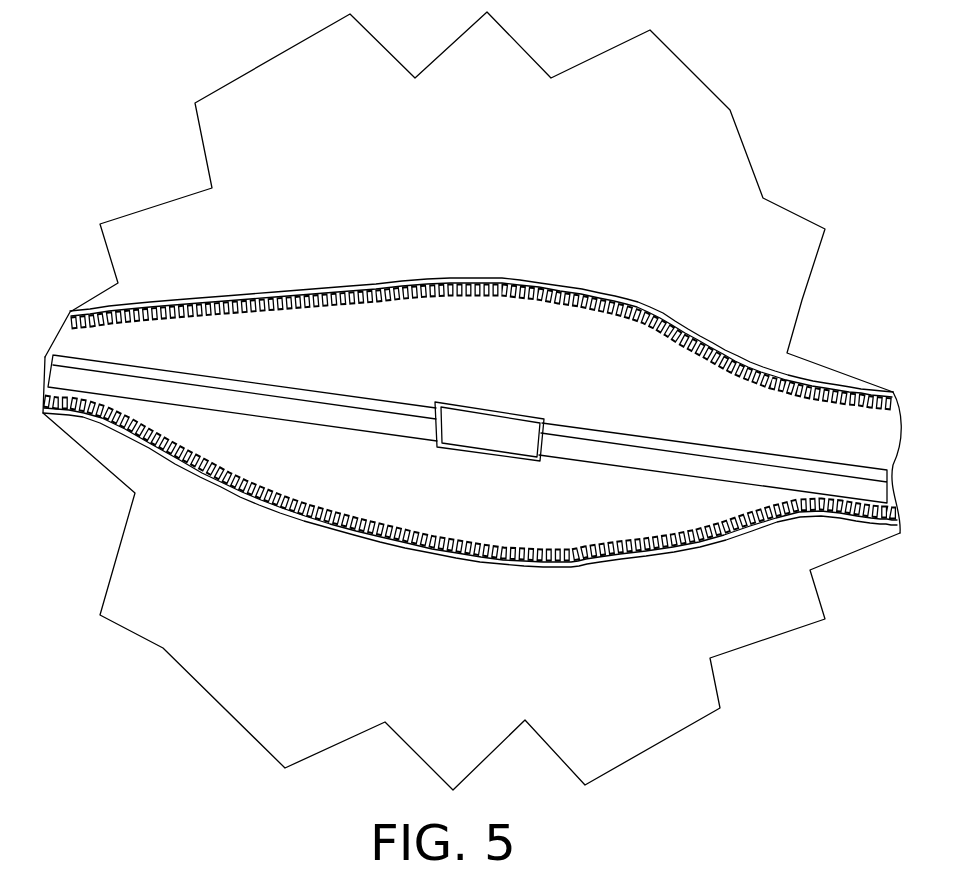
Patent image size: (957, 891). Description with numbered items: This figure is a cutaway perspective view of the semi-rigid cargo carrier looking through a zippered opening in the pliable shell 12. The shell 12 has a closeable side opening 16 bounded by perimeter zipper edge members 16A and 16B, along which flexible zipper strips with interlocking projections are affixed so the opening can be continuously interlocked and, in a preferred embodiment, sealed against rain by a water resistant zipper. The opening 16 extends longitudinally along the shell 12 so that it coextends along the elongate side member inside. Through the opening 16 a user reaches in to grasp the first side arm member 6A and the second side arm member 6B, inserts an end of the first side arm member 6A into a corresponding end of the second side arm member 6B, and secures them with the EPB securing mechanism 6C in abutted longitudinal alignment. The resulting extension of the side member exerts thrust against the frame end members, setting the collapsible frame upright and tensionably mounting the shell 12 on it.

The pliable shell 12 is at (675, 95).
The closeable side opening 16 is at (80, 352).
The zipper edge member 16A is at (350, 290).
The zipper edge member 16B is at (415, 546).
The first side arm member 6A is at (405, 423).
The second side arm member 6B is at (632, 455).
The EPB securing mechanism 6C is at (487, 412).